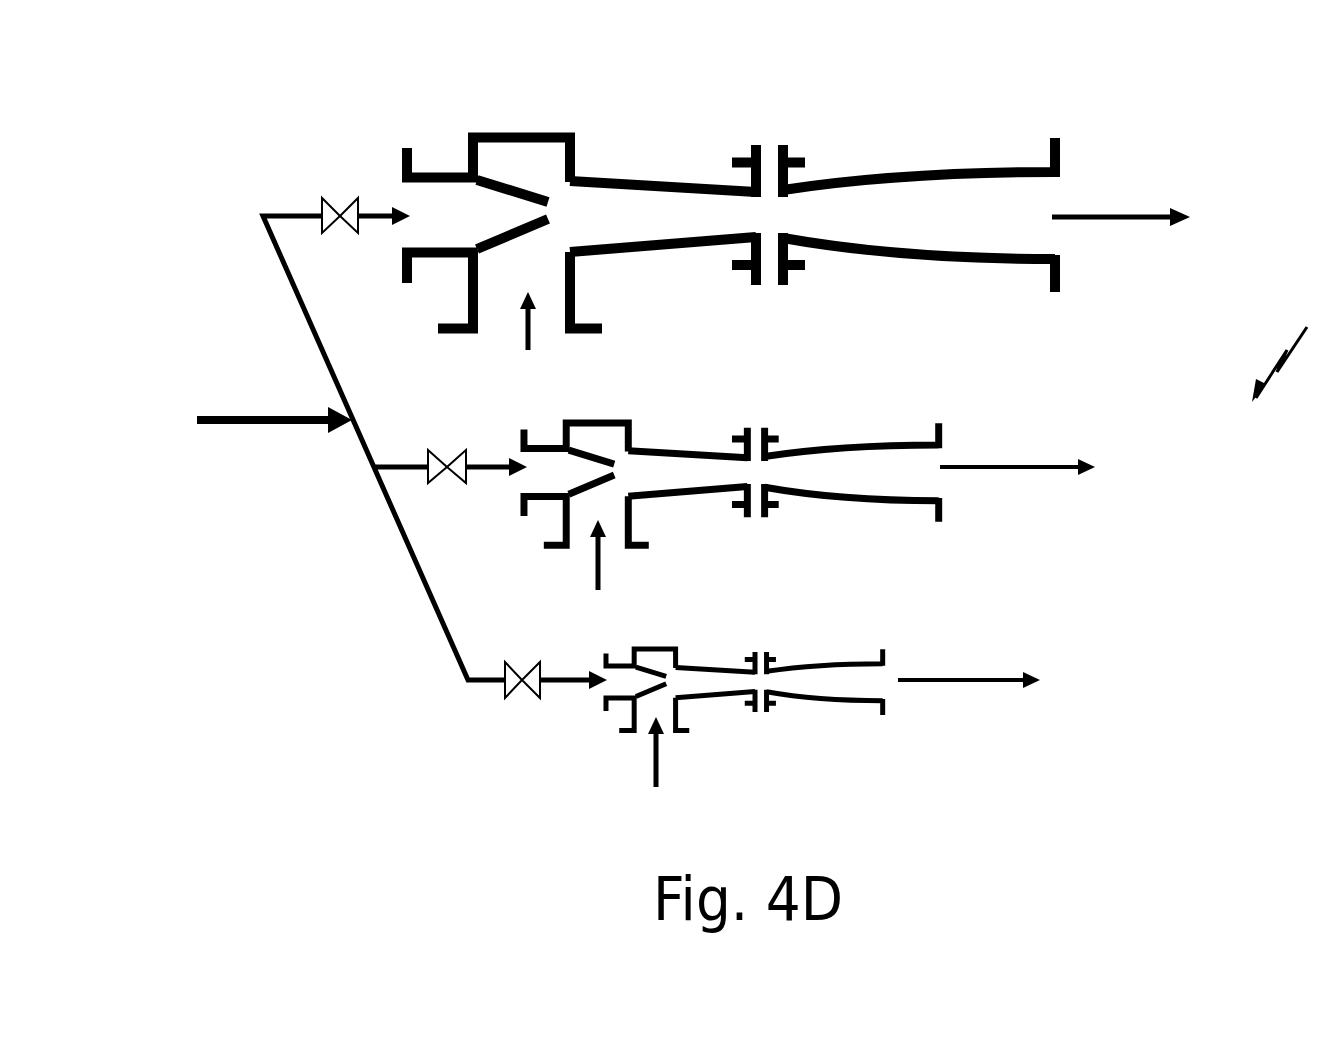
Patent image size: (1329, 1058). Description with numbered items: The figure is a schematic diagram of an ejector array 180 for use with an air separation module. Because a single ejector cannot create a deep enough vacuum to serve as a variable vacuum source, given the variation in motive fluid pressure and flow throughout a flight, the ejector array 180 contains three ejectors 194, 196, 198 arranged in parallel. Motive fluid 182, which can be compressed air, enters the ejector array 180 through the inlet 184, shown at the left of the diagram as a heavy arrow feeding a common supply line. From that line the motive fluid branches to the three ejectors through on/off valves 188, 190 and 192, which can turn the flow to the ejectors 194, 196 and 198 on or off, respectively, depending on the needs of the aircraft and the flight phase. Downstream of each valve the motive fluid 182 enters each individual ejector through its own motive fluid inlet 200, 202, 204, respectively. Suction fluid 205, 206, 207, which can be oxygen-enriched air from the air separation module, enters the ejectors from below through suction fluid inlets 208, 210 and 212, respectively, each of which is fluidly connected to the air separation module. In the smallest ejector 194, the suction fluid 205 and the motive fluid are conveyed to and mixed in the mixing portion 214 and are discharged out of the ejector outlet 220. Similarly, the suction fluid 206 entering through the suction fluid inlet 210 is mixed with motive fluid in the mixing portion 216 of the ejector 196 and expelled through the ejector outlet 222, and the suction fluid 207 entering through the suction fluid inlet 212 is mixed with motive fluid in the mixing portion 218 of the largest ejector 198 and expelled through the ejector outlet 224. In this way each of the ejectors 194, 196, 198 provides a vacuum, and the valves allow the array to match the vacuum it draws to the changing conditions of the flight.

The ejector array 180 is at (1290, 349).
The motive fluid 182 is at (263, 428).
The inlet 184 is at (197, 421).
The on/off valve 188 is at (507, 662).
The on/off valve 190 is at (432, 452).
The on/off valve 192 is at (325, 205).
The ejector 194 is at (750, 642).
The ejector 196 is at (740, 405).
The ejector 198 is at (752, 120).
The motive fluid inlet 200 is at (615, 683).
The motive fluid inlet 202 is at (530, 460).
The motive fluid inlet 204 is at (416, 203).
The suction fluid 205 is at (658, 767).
The suction fluid 206 is at (600, 572).
The suction fluid 207 is at (530, 343).
The suction fluid inlet 208 is at (650, 717).
The suction fluid inlet 210 is at (615, 542).
The suction fluid inlet 212 is at (552, 313).
The mixing portion 214 is at (722, 680).
The mixing portion 216 is at (707, 468).
The mixing portion 218 is at (648, 210).
The ejector outlet 220 is at (940, 683).
The ejector outlet 222 is at (1032, 470).
The ejector outlet 224 is at (1140, 220).